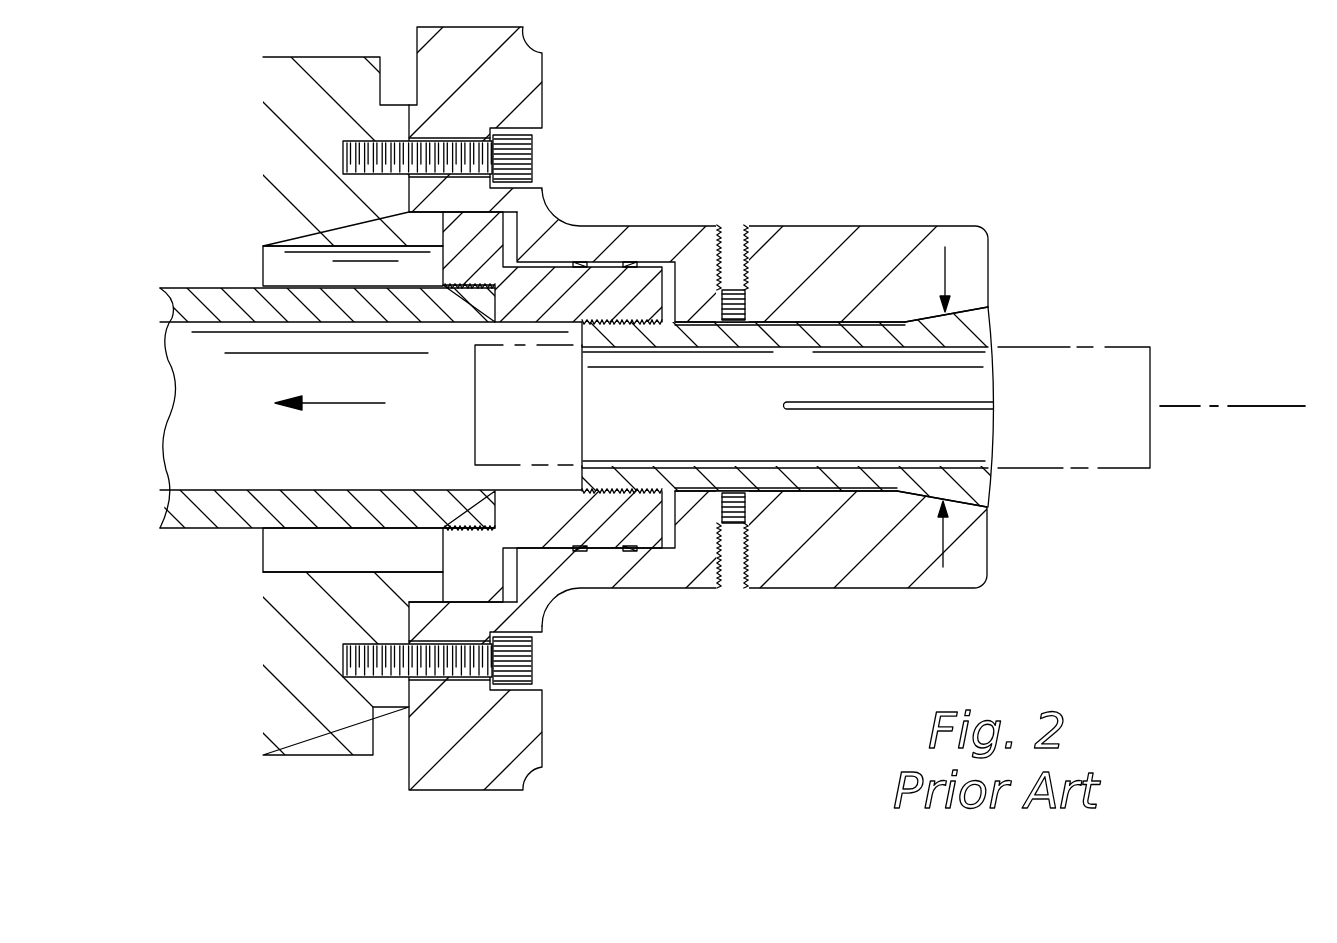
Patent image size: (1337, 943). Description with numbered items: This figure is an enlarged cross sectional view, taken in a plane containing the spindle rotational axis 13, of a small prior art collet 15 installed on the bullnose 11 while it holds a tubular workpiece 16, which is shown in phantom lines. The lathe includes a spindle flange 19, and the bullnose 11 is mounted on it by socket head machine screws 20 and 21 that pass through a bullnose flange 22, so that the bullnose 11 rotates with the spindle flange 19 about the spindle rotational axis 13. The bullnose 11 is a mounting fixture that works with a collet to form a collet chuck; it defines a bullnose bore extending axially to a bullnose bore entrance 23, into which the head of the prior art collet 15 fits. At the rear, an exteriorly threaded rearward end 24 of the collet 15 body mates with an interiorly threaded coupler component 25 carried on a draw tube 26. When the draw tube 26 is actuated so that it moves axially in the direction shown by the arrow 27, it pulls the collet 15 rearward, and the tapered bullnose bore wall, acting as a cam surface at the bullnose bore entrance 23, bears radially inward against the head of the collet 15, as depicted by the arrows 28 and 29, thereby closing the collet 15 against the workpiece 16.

The bullnose 11 is at (977, 225).
The spindle rotational axis 13 is at (1283, 407).
The prior art collet 15 is at (982, 313).
The tubular workpiece 16 is at (1130, 347).
The spindle flange 19 is at (275, 80).
The socket head machine screw 20 is at (527, 152).
The socket head machine screw 21 is at (525, 660).
The bullnose flange 22 is at (535, 62).
The bullnose bore entrance 23 is at (990, 505).
The exteriorly threaded rearward end 24 is at (632, 332).
The interiorly threaded coupler component 25 is at (557, 273).
The draw tube 26 is at (218, 292).
The arrow 27 is at (360, 403).
The arrow 28 is at (947, 257).
The arrow 29 is at (947, 560).